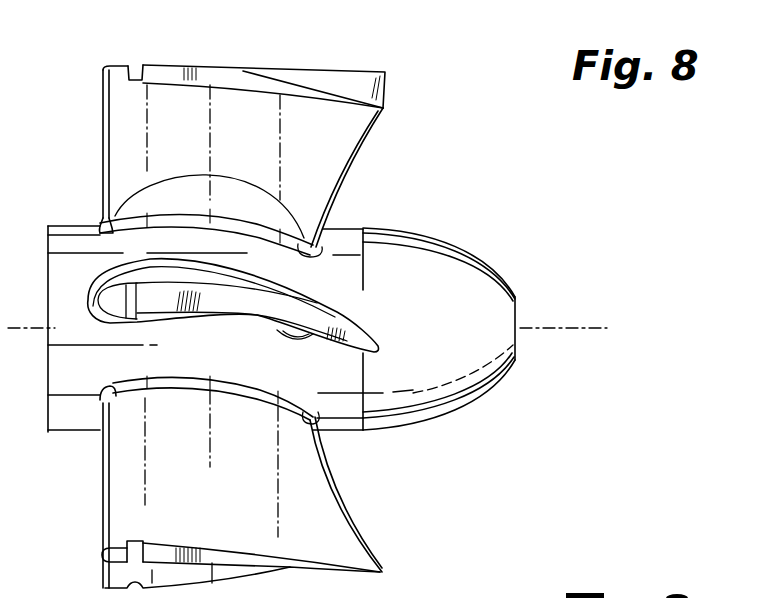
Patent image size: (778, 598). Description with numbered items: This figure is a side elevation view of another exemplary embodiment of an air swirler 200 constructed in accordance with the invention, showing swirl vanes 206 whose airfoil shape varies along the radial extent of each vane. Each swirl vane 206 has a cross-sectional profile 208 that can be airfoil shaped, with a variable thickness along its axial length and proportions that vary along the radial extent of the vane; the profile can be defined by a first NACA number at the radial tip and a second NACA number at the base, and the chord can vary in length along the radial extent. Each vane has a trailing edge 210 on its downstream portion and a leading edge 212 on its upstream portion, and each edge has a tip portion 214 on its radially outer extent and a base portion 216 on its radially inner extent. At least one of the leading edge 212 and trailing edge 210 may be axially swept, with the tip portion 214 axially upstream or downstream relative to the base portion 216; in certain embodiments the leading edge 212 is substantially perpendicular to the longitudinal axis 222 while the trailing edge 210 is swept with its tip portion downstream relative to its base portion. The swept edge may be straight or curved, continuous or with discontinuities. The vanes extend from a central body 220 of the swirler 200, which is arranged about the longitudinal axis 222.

The turbine vane assembly 200 is at (471, 206).
The vane segment 206 is at (94, 133).
The airfoil 208 is at (243, 310).
The trailing edge 210 is at (370, 132).
The leading edge 212 is at (100, 103).
The outer platform 214 is at (228, 76).
The fillet 216 is at (240, 222).
The nose cone 220 is at (476, 397).
The axis 222 is at (592, 328).